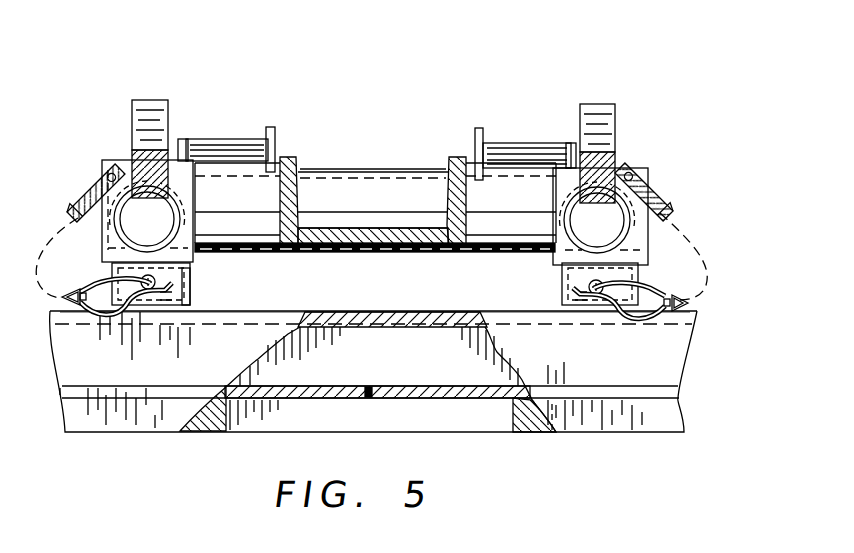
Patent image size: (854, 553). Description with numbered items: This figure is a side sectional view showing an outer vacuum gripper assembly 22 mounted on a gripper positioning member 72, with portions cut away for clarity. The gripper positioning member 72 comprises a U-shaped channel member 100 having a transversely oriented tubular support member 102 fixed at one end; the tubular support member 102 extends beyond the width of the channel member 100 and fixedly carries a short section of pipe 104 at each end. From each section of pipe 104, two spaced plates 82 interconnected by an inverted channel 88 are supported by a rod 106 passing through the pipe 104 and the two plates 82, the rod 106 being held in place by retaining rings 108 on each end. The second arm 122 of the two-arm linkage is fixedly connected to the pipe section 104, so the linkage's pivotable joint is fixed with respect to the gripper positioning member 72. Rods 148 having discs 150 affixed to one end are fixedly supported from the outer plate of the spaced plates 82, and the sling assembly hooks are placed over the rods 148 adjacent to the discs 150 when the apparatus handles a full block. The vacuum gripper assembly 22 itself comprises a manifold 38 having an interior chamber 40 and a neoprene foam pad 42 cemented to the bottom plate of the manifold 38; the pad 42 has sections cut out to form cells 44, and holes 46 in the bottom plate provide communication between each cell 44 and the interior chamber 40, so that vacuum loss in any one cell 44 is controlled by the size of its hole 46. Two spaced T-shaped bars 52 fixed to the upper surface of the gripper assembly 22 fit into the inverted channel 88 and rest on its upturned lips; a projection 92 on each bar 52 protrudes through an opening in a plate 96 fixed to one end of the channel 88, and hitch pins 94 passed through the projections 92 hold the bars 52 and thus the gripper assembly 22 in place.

The vacuum gripper assembly 22 is at (698, 364).
The manifold 38 is at (498, 310).
The interior chamber 40 is at (347, 333).
The neoprene foam pad 42 is at (562, 435).
The cells 44 is at (225, 428).
The holes 46 is at (374, 396).
The T-shaped bars 52 is at (156, 306).
The gripper positioning member 72 is at (427, 174).
The spaced plates 82 is at (103, 240).
The inverted channel 88 is at (190, 299).
The projection 92 is at (152, 290).
The hitch pins 94 is at (96, 312).
The plate 96 is at (188, 294).
The U-shaped channel member 100 is at (290, 158).
The tubular support member 102 is at (318, 172).
The section of pipe 104 is at (183, 158).
The rod 106 is at (130, 190).
The retaining rings 108 is at (117, 218).
The second arm 122 is at (140, 100).
The rods 148 is at (245, 139).
The discs 150 is at (280, 130).